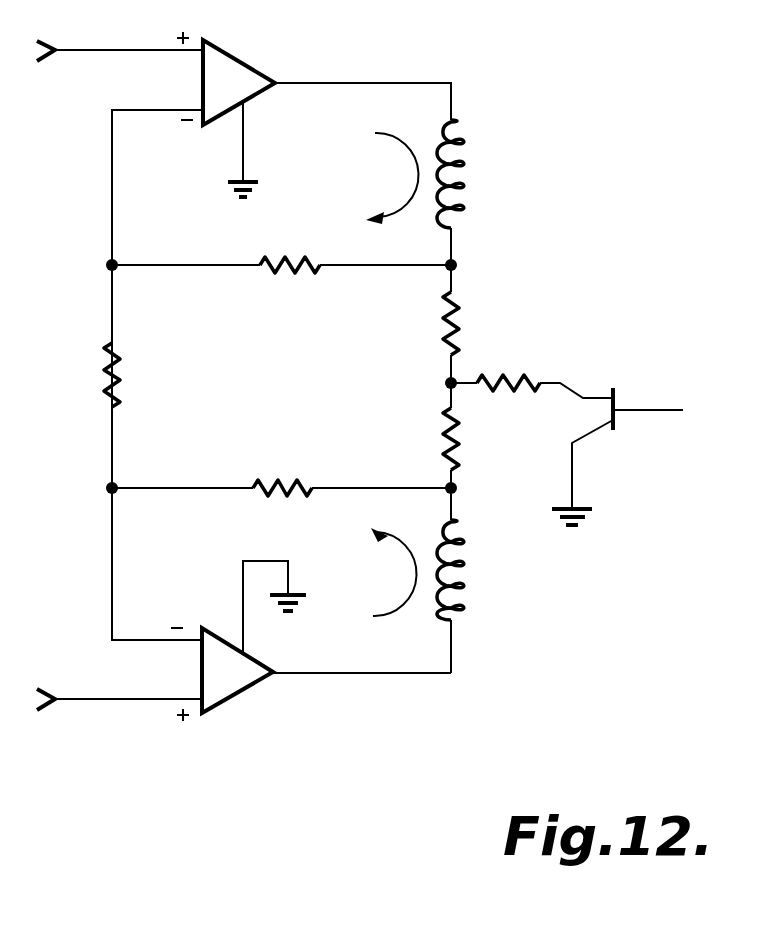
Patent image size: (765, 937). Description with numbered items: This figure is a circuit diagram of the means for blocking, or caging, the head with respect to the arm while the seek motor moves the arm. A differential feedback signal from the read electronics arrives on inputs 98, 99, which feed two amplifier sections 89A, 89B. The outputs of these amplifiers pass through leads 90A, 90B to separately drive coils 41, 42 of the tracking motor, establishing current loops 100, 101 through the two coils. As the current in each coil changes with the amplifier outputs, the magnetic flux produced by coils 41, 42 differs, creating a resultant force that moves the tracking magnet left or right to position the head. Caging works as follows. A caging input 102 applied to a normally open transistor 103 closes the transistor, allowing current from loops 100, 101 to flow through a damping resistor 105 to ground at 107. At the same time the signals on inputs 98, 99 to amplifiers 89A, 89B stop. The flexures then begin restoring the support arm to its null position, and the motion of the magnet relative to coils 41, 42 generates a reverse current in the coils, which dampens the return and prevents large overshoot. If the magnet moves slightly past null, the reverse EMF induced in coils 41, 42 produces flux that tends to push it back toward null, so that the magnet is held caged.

The input lead 98 is at (139, 50).
The input lead 99 is at (122, 700).
The amplifier section 89A is at (252, 68).
The amplifier section 89B is at (230, 711).
The lead 90A is at (370, 83).
The lead 90B is at (411, 673).
The coil 41 is at (458, 140).
The coil 42 is at (455, 607).
The current loop 100 is at (386, 178).
The current loop 101 is at (388, 572).
The damping resistor 105 is at (505, 372).
The transistor 103 is at (618, 388).
The caging input 102 is at (663, 410).
The ground 107 is at (578, 502).